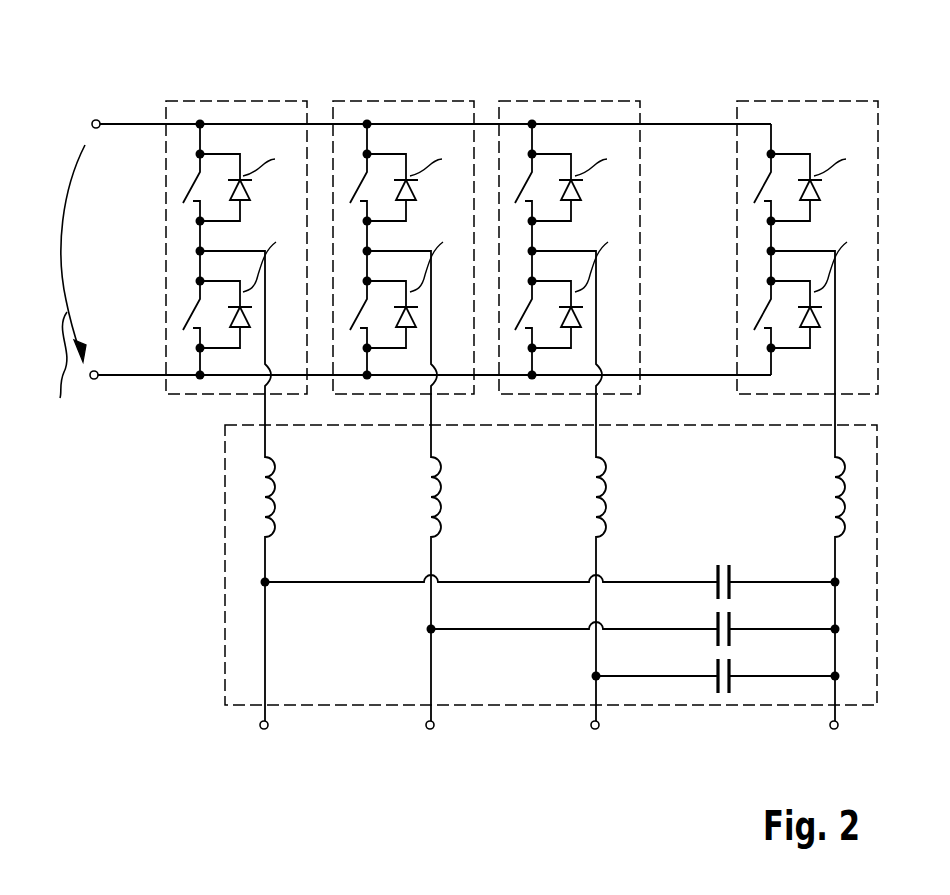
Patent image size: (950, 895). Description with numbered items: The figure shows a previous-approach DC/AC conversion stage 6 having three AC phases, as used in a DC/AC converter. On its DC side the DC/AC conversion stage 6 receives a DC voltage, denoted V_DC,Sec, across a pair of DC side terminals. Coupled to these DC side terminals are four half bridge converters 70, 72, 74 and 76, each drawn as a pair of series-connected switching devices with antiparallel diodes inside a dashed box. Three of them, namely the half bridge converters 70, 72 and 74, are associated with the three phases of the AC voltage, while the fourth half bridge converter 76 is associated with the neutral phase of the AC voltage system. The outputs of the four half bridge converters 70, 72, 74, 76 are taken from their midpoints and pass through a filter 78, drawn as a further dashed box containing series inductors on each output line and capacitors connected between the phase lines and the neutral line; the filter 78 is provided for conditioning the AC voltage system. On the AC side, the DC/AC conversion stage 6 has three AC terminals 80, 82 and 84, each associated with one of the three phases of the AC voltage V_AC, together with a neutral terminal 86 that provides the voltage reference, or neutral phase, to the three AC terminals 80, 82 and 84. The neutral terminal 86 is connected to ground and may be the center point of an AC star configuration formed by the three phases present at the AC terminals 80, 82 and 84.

The DC/AC conversion stage 6 is at (673, 98).
The half bridge converter 70 is at (215, 101).
The half bridge converter 72 is at (382, 101).
The half bridge converter 74 is at (547, 101).
The half bridge converter 76 is at (786, 101).
The filter 78 is at (225, 546).
The AC terminal 80 is at (263, 729).
The AC terminal 82 is at (429, 729).
The AC terminal 84 is at (594, 729).
The neutral terminal 86 is at (833, 729).